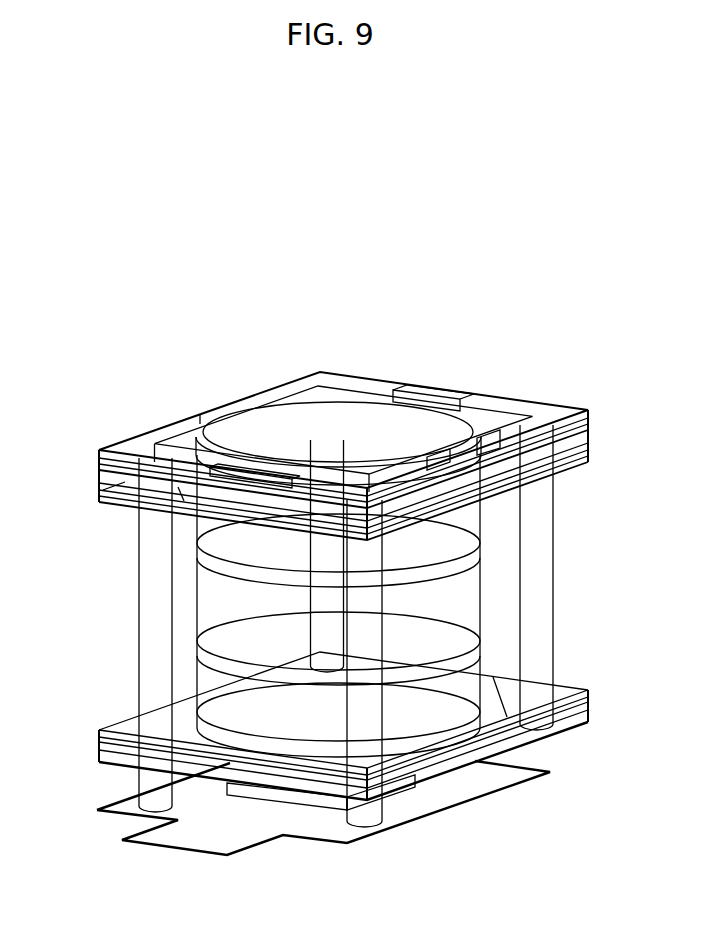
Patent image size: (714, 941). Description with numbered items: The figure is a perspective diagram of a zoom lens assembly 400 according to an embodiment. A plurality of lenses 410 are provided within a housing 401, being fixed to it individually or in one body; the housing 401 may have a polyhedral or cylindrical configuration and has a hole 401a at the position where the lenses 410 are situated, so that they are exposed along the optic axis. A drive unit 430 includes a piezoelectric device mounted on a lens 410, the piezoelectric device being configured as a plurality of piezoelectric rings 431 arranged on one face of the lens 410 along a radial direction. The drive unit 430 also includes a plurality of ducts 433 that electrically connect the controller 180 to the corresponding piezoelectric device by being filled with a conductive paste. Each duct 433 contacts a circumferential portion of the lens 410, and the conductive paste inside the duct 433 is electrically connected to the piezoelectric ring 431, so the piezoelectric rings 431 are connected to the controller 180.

The zoom lens assembly 400 is at (155, 367).
The housing 401 is at (590, 470).
The hole 401a is at (483, 600).
The lens 410 is at (437, 600).
The drive unit 430 is at (122, 544).
The piezoelectric ring 431 is at (458, 538).
The duct 433 is at (139, 612).
The controller 180 is at (256, 846).